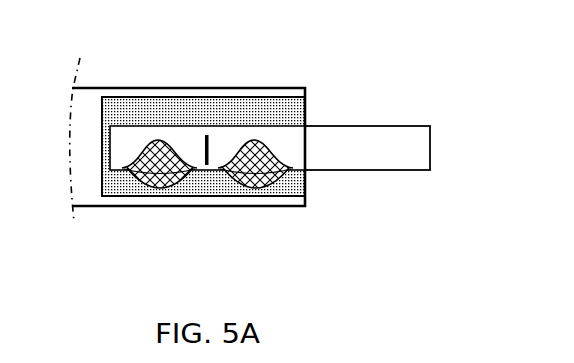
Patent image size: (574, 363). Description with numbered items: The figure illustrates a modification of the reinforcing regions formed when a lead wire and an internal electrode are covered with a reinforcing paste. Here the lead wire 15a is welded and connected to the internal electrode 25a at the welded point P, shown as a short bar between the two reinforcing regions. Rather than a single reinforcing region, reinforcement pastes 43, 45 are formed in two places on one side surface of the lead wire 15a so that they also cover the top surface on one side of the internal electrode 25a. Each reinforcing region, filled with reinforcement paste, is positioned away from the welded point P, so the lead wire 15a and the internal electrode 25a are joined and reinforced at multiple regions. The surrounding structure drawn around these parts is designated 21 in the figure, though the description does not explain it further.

The housing / case 21 is at (268, 87).
The internal electrode 25a is at (190, 108).
The lead wire 15a is at (373, 137).
The reinforcement paste 43 is at (160, 183).
The reinforcement paste 45 is at (257, 183).
The welded point P is at (207, 135).